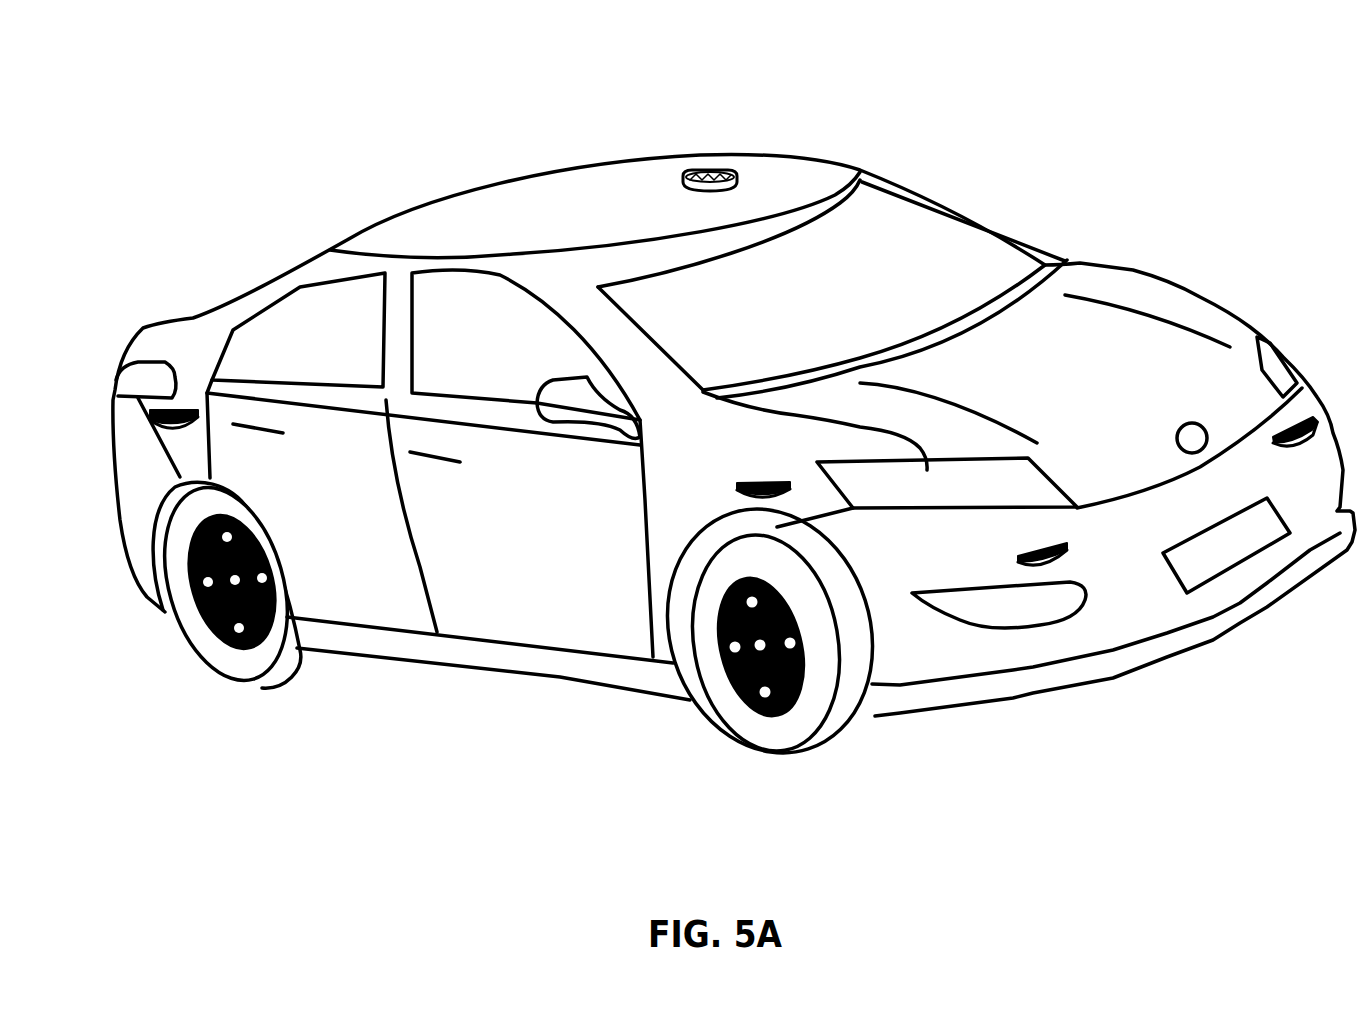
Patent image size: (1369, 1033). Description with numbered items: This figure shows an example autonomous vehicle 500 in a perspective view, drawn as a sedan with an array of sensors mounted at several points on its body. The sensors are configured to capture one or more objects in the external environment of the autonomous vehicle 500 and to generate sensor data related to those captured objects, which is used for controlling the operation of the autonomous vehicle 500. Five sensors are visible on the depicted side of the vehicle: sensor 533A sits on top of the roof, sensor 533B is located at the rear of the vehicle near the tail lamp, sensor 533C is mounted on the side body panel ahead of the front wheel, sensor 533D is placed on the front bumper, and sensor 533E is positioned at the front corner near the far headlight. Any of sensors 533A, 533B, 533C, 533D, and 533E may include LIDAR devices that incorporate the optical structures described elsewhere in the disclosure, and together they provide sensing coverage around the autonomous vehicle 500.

The autonomous vehicle 500 is at (1115, 102).
The sensor 533A is at (710, 170).
The sensor 533B is at (197, 409).
The sensor 533C is at (763, 482).
The sensor 533D is at (1020, 552).
The sensor 533E is at (1273, 440).